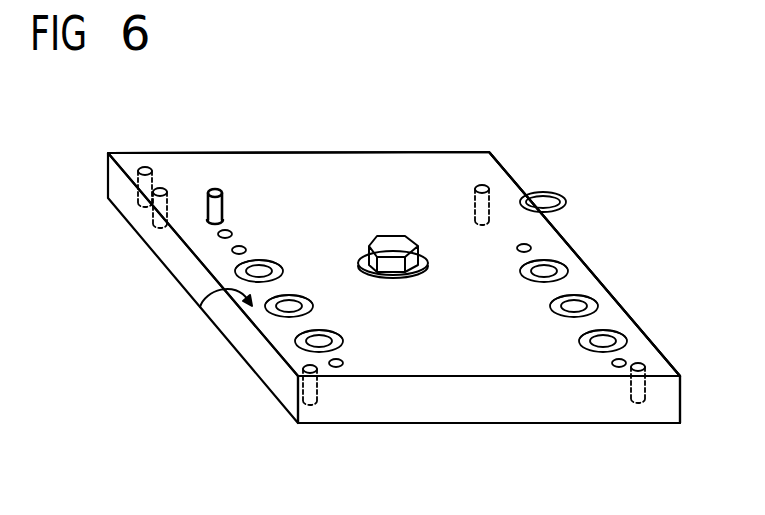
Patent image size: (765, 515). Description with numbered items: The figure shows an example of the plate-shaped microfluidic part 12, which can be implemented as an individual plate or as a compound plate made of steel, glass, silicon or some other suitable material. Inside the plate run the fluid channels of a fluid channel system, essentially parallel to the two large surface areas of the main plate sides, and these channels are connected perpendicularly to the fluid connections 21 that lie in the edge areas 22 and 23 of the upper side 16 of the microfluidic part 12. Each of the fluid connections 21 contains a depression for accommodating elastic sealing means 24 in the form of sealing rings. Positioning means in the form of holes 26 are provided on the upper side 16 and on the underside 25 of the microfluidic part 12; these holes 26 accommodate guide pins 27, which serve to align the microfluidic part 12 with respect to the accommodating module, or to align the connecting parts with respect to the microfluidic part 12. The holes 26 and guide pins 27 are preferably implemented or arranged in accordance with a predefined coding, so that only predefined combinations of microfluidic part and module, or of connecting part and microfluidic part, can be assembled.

The plate-shaped microfluidic part 12 is at (263, 358).
The upper side 16 is at (318, 178).
The fluid connections 21 is at (620, 332).
The edge area 22 is at (221, 289).
The edge area 23 is at (588, 273).
The elastic sealing means 24 is at (557, 191).
The underside 25 is at (522, 424).
The holes 26 is at (140, 197).
The guide pins 27 is at (215, 190).